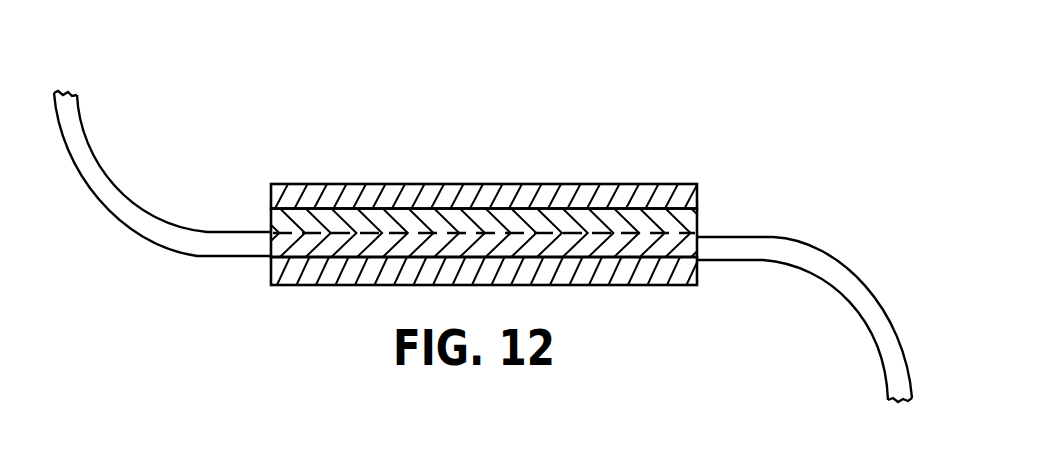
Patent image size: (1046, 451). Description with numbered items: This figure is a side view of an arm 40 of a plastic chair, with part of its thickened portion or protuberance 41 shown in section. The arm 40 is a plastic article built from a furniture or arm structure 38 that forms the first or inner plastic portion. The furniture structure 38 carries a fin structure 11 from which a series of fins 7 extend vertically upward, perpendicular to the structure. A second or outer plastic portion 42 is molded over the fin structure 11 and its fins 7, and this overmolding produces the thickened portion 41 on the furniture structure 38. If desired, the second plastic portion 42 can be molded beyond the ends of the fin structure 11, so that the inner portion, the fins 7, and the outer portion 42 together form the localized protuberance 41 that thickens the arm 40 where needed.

The arm 40 is at (626, 87).
The thickened portion 41 is at (523, 184).
The second plastic portion 42 is at (657, 184).
The fins 7 is at (697, 225).
The fin structure 11 is at (270, 223).
The furniture structure 38 is at (803, 243).